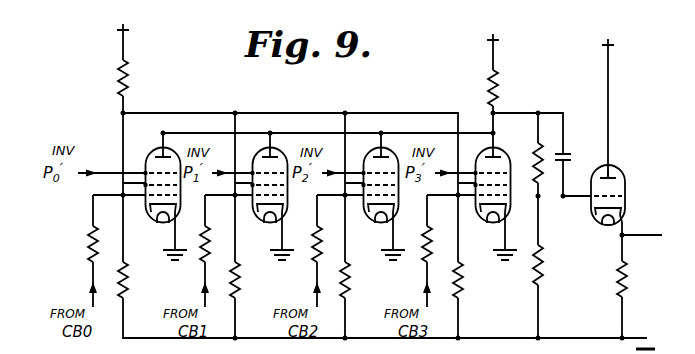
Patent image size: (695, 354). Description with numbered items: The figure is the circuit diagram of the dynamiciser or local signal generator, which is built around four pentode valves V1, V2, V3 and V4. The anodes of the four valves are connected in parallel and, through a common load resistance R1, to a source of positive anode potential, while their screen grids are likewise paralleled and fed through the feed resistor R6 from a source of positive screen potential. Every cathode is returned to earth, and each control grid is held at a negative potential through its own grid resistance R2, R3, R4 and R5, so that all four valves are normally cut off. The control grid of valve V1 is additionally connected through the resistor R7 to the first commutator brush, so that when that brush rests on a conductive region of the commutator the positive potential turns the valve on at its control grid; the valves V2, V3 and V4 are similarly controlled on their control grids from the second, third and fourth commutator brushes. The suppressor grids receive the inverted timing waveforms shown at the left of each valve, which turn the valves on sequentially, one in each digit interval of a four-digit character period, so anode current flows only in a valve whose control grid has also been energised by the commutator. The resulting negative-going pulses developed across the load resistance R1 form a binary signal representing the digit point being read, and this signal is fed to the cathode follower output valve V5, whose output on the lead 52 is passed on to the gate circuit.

The load resistance R1 is at (509, 88).
The grid resistance R2 is at (138, 280).
The grid resistance R3 is at (250, 280).
The grid resistance R4 is at (360, 280).
The grid resistance R5 is at (473, 280).
The feed resistor R6 is at (139, 78).
The resistor R7 is at (72, 244).
The pentode valve V1 is at (160, 196).
The pentode valve V2 is at (269, 196).
The pentode valve V3 is at (378, 196).
The pentode valve V4 is at (489, 196).
The cathode follower output valve V5 is at (624, 195).
The lead 52 is at (642, 227).